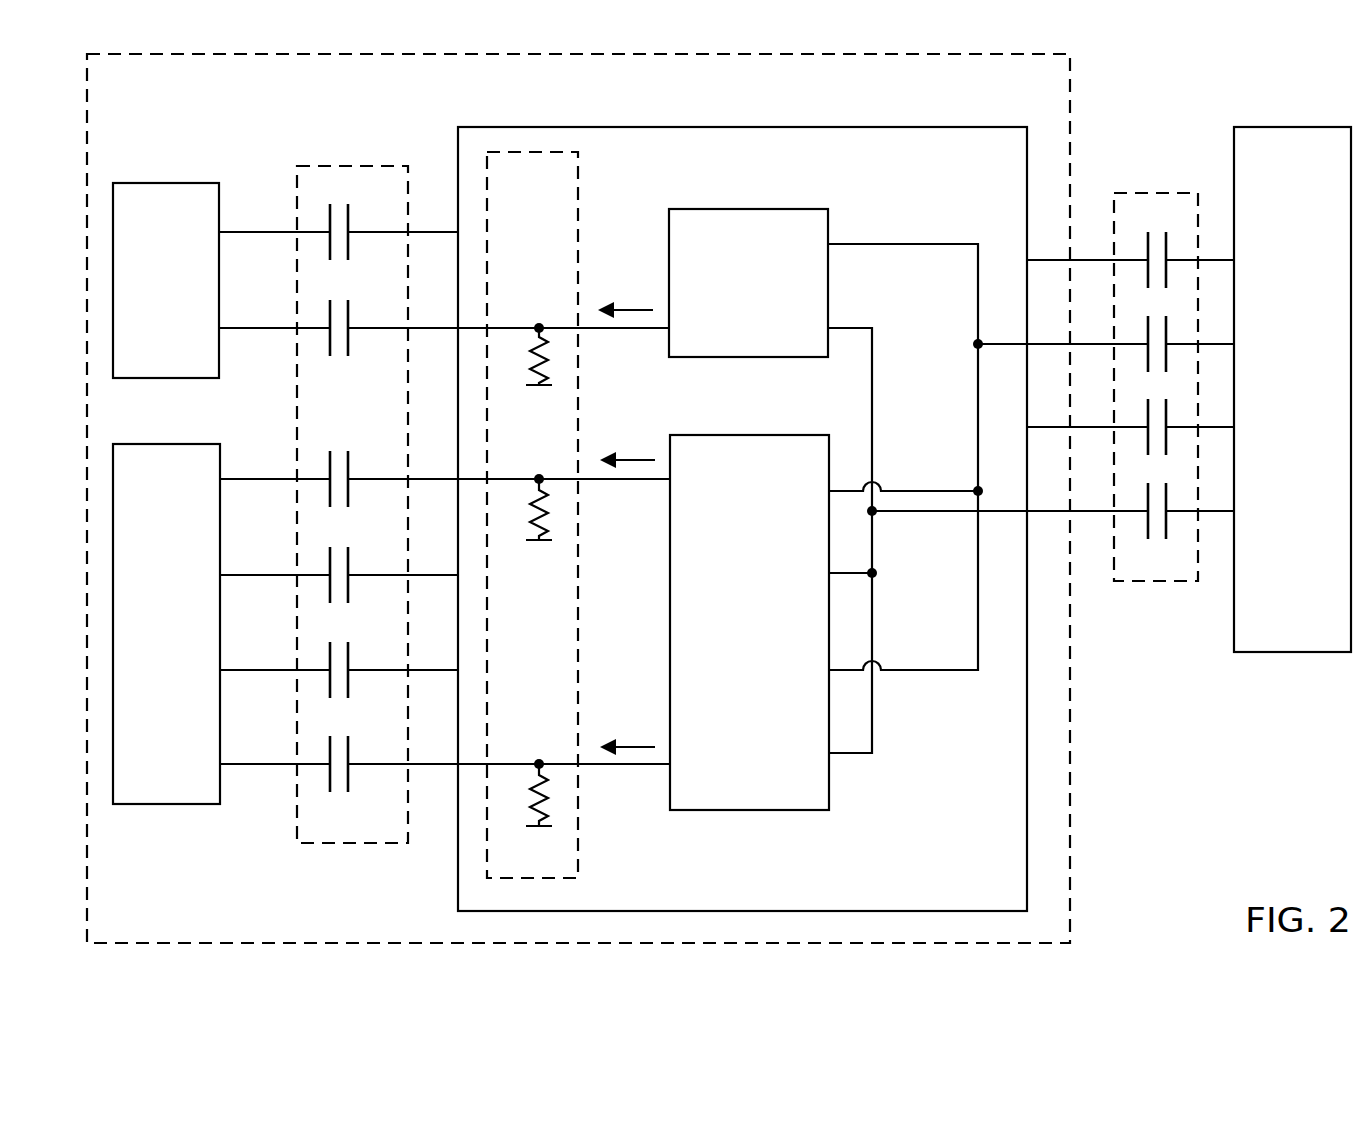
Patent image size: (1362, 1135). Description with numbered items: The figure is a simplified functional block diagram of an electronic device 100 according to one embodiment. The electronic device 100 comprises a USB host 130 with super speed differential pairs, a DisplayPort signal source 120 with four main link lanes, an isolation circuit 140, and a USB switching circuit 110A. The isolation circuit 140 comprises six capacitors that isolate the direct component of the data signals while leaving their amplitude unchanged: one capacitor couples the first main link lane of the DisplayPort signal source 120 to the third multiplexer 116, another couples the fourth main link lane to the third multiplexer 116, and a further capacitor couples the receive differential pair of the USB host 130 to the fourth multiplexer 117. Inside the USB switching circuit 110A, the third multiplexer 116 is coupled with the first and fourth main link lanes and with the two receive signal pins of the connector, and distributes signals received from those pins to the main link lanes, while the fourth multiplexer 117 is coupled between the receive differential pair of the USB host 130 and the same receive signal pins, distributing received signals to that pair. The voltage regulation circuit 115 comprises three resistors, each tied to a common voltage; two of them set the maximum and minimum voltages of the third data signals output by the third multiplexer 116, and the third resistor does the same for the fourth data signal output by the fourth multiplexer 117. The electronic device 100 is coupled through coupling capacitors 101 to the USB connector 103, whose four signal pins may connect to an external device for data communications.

The electronic device 100 is at (165, 97).
The USB host 130 is at (165, 183).
The DisplayPort signal source 120 is at (175, 444).
The isolation circuit 140 is at (347, 166).
The USB switching circuit 110A is at (742, 490).
The voltage regulation circuit 115 is at (532, 152).
The fourth multiplexer 117 is at (766, 322).
The third multiplexer 116 is at (767, 664).
The coupling capacitors 101 is at (1148, 193).
The USB connector 103 is at (1293, 127).